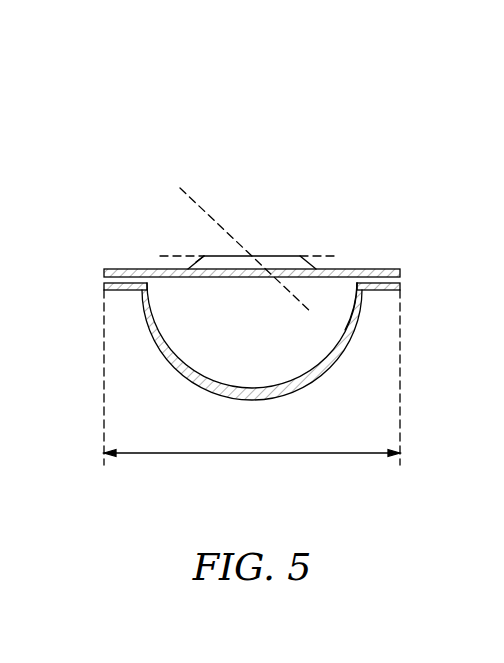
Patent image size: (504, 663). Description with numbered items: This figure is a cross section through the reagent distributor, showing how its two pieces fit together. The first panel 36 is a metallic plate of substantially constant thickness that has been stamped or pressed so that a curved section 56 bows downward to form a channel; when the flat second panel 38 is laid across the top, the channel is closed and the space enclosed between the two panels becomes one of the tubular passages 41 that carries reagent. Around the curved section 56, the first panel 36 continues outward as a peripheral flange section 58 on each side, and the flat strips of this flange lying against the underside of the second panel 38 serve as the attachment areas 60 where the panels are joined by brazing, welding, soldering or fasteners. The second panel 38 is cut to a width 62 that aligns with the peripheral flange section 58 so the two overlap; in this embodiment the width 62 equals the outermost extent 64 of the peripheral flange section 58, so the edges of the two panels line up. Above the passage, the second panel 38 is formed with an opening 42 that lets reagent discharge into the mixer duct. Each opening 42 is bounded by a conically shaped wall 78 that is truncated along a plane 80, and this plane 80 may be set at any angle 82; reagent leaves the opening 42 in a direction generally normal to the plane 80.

The first panel 36 is at (222, 365).
The second panel 38 is at (328, 263).
The tubular passages 41 is at (187, 341).
The openings 42 is at (273, 243).
The curved section 56 is at (322, 378).
The peripheral flange section 58 is at (378, 286).
The attachment areas 60 is at (379, 277).
The width 62 is at (145, 456).
The outermost extent 64 is at (101, 284).
The conically shaped wall 78 is at (205, 264).
The plane 80 is at (197, 207).
The angle 82 is at (201, 212).